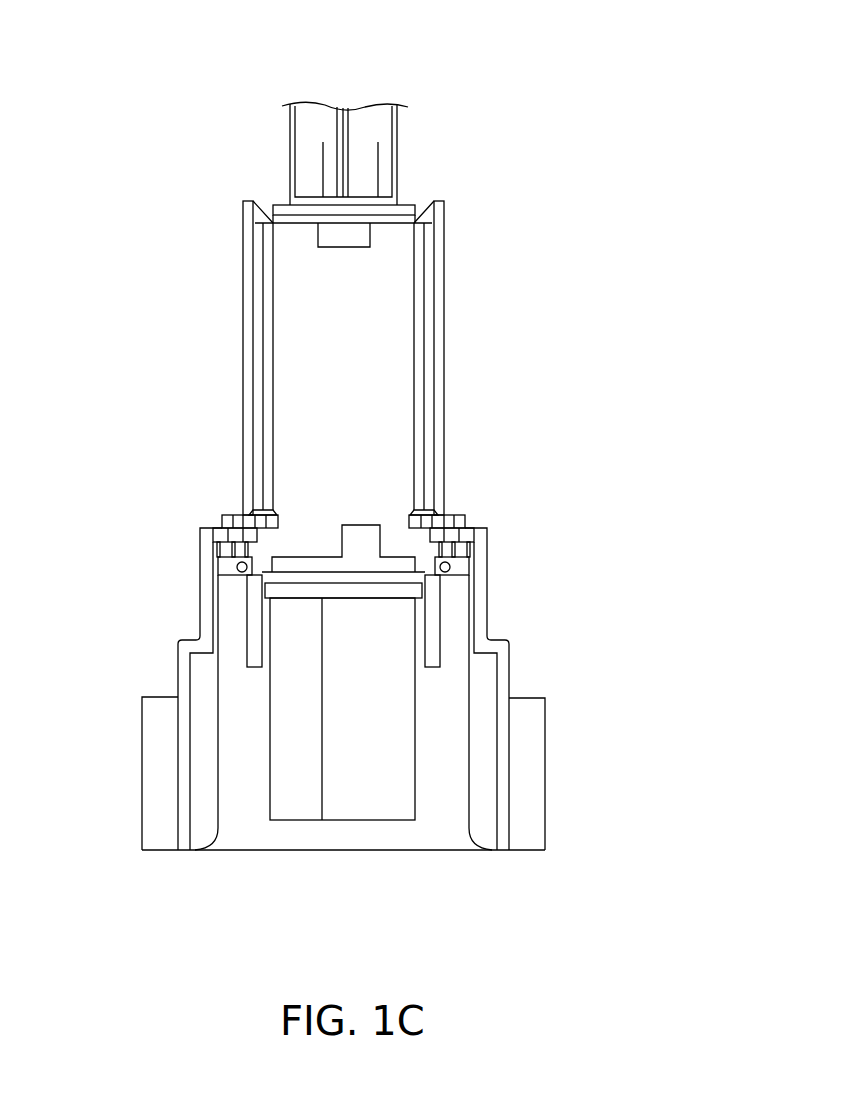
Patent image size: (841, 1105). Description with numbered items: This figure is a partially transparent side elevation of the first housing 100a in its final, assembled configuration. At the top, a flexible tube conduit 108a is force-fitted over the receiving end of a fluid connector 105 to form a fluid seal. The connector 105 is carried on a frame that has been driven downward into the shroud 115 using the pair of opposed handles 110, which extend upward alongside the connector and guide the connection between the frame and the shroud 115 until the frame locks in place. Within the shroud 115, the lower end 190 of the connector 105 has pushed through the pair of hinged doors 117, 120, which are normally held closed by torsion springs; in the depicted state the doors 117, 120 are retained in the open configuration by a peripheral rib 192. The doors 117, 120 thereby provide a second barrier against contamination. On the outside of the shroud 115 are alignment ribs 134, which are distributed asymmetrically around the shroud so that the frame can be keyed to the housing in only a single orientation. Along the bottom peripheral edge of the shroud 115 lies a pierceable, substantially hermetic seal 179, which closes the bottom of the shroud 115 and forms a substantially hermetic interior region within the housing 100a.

The first housing 100a is at (135, 377).
The tube conduit 108a is at (432, 146).
The handles 110 is at (243, 266).
The shroud 115 is at (182, 665).
The fluid connectors 105 is at (445, 700).
The peripheral rib 192 is at (390, 590).
The hinged door 120 is at (437, 600).
The hinged door 117 is at (252, 587).
The lower ends 190 is at (403, 772).
The alignment ribs 134 is at (155, 763).
The seal 179 is at (242, 850).